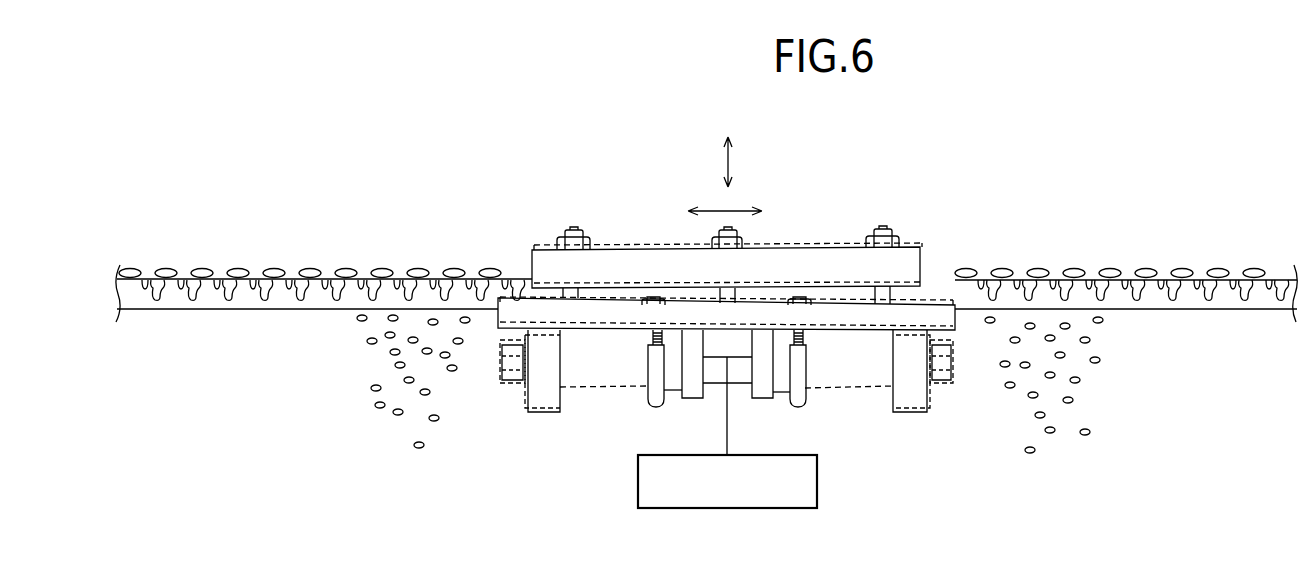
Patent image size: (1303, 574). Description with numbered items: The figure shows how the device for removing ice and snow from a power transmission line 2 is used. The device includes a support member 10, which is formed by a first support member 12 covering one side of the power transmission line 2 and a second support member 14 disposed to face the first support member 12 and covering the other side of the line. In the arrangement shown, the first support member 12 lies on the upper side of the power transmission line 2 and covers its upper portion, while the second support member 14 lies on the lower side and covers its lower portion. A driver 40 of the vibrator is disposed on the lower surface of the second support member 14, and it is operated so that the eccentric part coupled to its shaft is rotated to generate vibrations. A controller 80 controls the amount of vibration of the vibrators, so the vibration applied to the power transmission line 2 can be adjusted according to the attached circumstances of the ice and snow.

The power transmission line 2 is at (1022, 278).
The support member 10 is at (852, 189).
The first support member 12 is at (775, 262).
The second support member 14 is at (849, 318).
The driver 40 is at (592, 378).
The controller 80 is at (818, 483).